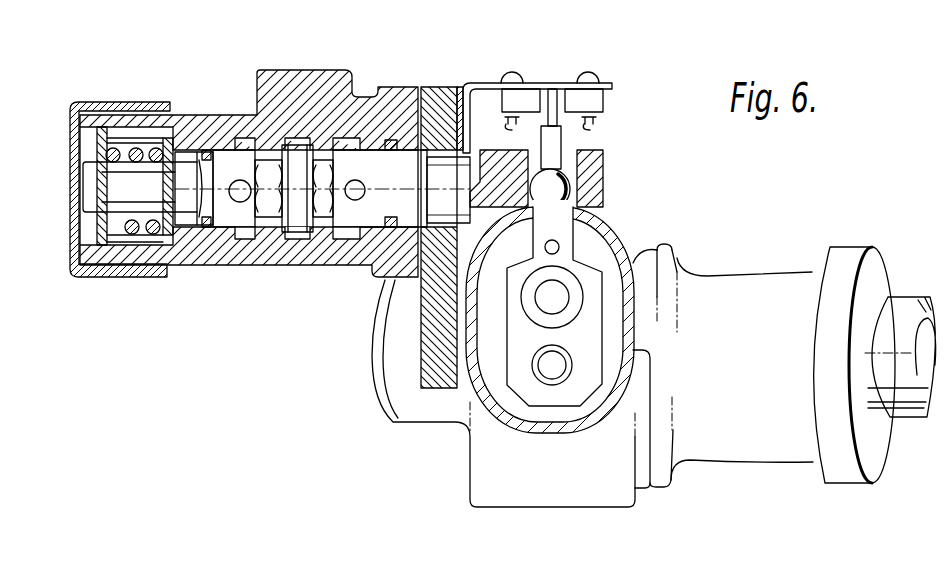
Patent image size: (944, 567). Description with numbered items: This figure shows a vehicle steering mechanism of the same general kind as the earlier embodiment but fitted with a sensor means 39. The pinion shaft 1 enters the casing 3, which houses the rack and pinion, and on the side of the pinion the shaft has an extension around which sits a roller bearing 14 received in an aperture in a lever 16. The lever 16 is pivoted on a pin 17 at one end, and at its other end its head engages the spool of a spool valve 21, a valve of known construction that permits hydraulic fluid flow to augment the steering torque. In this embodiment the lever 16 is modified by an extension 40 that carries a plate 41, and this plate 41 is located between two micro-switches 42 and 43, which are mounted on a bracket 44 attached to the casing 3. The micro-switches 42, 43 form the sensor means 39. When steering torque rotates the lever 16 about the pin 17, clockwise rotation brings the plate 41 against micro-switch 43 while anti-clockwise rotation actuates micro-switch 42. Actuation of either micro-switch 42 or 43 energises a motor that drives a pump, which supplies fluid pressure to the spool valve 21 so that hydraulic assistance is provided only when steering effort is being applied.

The pinion shaft 1 is at (565, 290).
The casing 3 is at (495, 485).
The roller bearing 14 is at (580, 298).
The lever 16 is at (517, 319).
The pin 17 is at (548, 376).
The spool valve 21 is at (308, 94).
The sensor means 39 is at (558, 74).
The extension 40 is at (558, 150).
The plate 41 is at (557, 110).
The micro-switch 42 is at (529, 92).
The micro-switch 43 is at (597, 90).
The bracket 44 is at (472, 80).